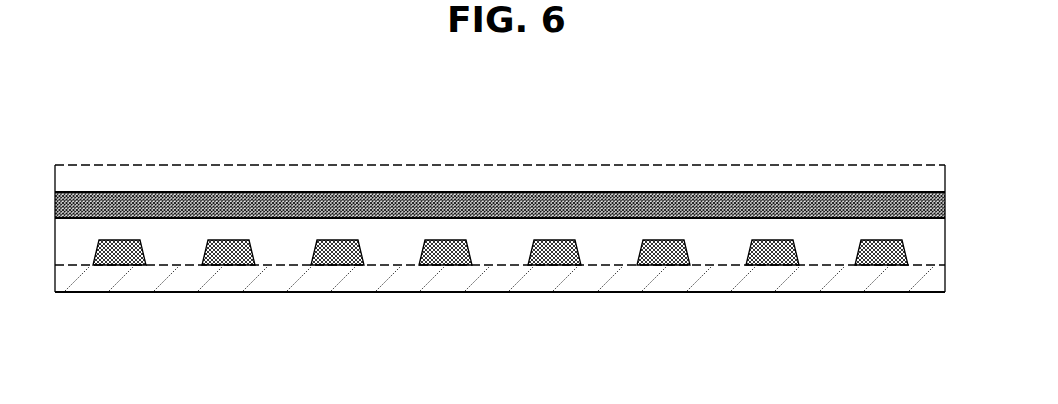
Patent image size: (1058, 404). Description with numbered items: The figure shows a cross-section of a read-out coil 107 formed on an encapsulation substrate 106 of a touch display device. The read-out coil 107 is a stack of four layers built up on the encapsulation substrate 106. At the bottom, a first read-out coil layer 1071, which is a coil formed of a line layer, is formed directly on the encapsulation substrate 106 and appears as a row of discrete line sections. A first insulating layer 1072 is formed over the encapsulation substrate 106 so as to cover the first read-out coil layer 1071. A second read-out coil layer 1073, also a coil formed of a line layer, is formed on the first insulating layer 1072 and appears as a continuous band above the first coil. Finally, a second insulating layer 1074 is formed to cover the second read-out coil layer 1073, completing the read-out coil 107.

The encapsulation substrate 106 is at (315, 277).
The read-out coil 107 is at (180, 165).
The first read-out coil layer 1071 is at (552, 256).
The first insulating layer 1072 is at (615, 258).
The second read-out coil layer 1073 is at (532, 192).
The second insulating layer 1074 is at (652, 183).